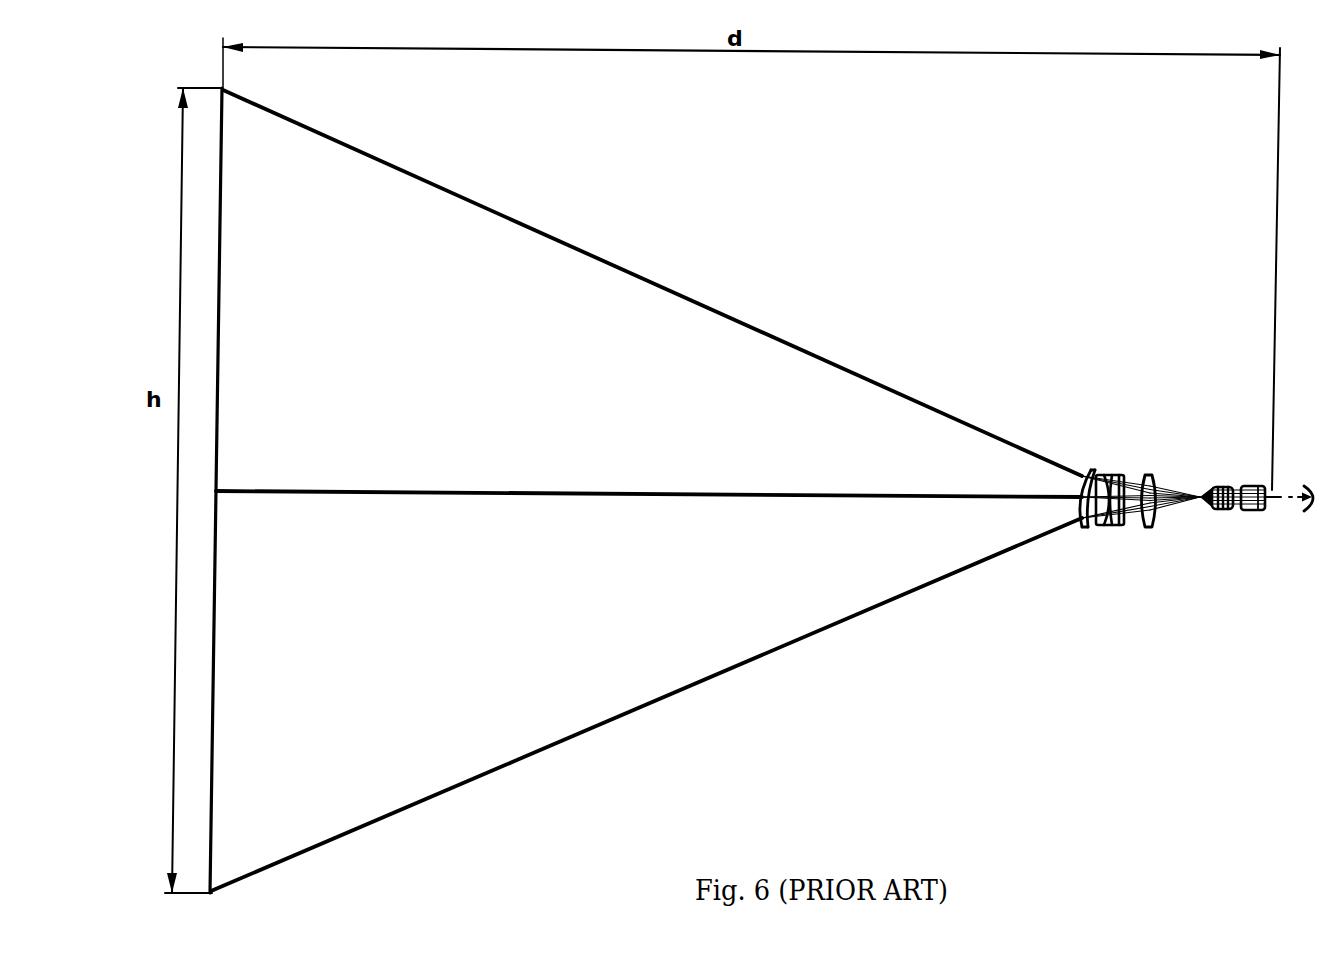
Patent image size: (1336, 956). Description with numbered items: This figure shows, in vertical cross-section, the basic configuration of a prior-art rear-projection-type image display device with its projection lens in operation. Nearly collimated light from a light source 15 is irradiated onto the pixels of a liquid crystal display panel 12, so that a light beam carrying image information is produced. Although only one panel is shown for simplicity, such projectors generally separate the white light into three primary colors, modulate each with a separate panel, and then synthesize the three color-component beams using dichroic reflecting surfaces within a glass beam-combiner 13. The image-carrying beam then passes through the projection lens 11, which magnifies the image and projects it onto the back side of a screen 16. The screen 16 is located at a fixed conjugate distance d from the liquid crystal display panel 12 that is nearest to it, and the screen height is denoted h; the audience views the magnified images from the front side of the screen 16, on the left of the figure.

The projection lens 11 is at (1230, 541).
The liquid crystal display panel 12 is at (1266, 513).
The glass beam-combiner 13 is at (1253, 513).
The light source 15 is at (1305, 513).
The screen 16 is at (214, 620).